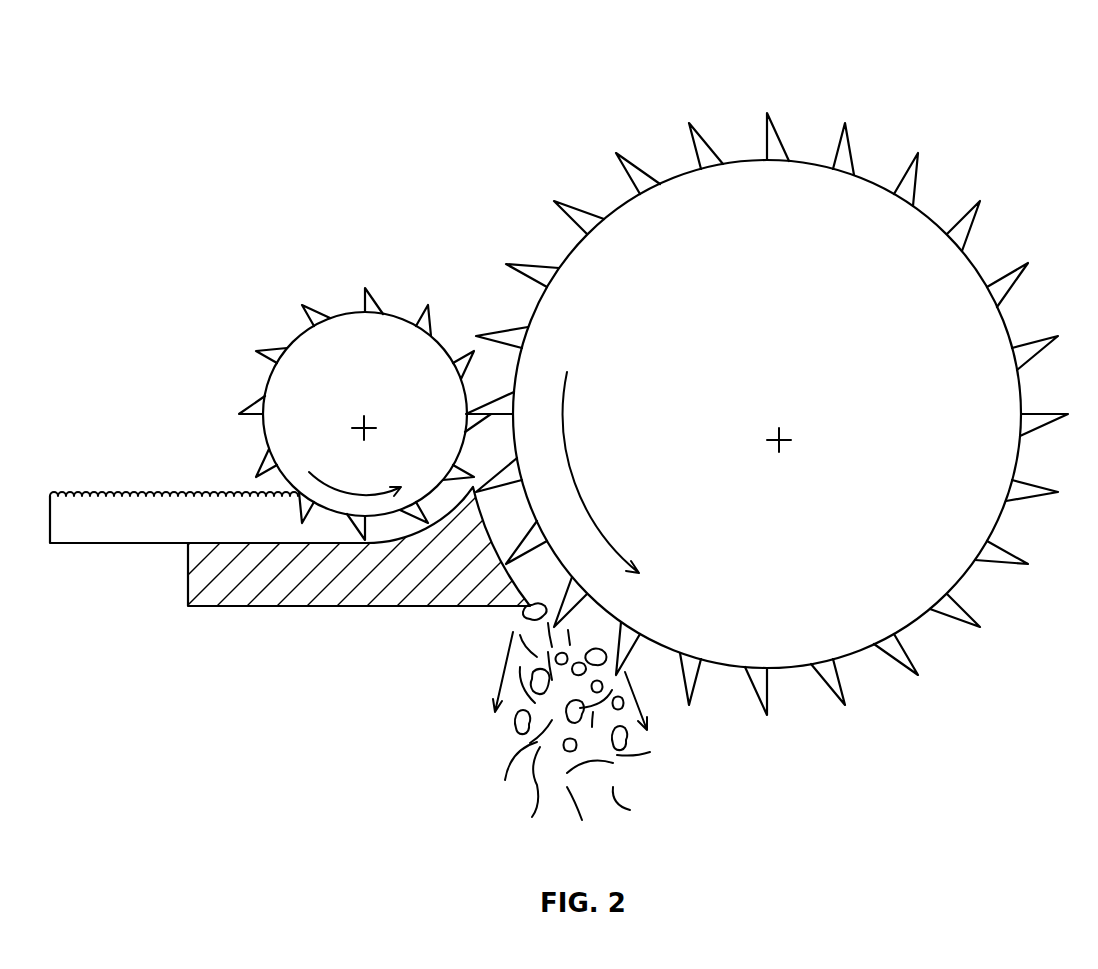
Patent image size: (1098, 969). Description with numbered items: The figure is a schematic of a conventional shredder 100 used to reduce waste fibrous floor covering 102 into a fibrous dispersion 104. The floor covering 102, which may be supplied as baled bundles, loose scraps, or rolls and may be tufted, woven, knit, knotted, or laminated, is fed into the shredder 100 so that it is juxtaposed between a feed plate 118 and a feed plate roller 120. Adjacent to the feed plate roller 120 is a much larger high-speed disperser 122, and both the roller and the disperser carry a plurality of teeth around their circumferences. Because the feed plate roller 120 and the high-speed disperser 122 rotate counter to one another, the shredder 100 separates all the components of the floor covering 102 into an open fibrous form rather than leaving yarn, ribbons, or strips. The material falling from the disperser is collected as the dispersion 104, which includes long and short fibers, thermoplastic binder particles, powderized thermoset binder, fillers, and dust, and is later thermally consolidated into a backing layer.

The shredder 100 is at (496, 181).
The floor covering 102 is at (135, 471).
The fibrous dispersion 104 is at (490, 755).
The feed plate 118 is at (330, 610).
The feed plate roller 120 is at (393, 327).
The high-speed disperser 122 is at (800, 178).